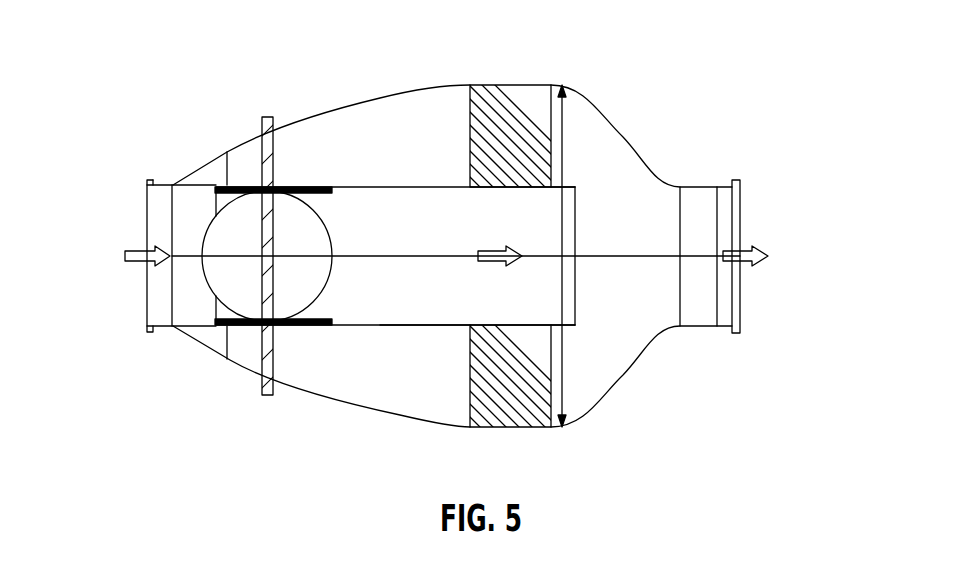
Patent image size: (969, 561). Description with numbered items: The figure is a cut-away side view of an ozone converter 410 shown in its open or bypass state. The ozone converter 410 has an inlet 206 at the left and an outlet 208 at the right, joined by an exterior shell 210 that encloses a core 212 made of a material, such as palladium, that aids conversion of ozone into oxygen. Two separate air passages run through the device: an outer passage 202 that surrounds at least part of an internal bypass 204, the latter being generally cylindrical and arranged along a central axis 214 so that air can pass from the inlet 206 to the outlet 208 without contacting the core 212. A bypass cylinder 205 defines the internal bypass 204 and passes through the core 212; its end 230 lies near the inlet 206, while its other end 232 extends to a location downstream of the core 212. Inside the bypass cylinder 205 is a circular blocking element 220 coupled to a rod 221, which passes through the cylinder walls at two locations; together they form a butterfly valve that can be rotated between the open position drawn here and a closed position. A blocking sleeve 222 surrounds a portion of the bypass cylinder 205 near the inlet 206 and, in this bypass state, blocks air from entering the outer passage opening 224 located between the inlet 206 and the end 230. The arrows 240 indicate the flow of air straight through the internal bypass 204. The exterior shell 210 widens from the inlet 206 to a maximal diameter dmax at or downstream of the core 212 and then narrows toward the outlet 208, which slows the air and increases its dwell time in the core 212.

The ozone converter 410 is at (231, 45).
The outer passage 202 is at (375, 108).
The internal bypass 204 is at (367, 305).
The bypass cylinder 205 is at (442, 325).
The inlet 206 is at (160, 212).
The outlet 208 is at (742, 195).
The exterior shell 210 is at (587, 412).
The core 212 is at (512, 98).
The central axis 214 is at (625, 352).
The blocking element 220 is at (302, 233).
The rod 221 is at (262, 385).
The blocking sleeve 222 is at (302, 180).
The outer passage opening 224 is at (195, 180).
The end of the bypass cylinder 230 is at (215, 318).
The other end of the bypass cylinder 232 is at (575, 230).
The flow direction arrow 240 is at (132, 250).
The maximal diameter dmax is at (563, 335).